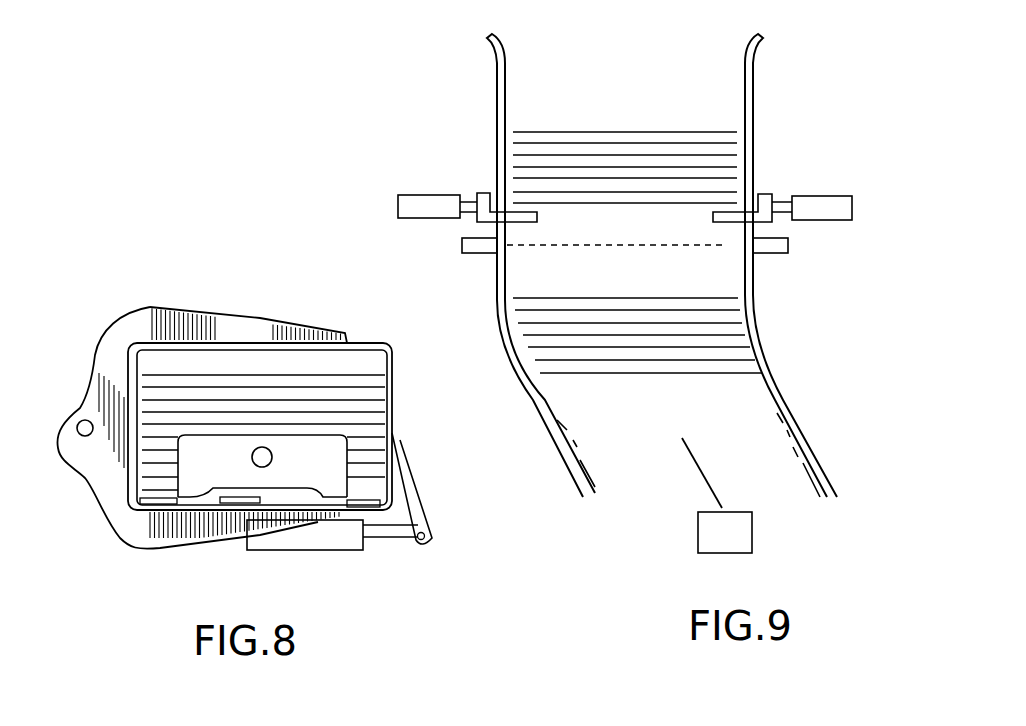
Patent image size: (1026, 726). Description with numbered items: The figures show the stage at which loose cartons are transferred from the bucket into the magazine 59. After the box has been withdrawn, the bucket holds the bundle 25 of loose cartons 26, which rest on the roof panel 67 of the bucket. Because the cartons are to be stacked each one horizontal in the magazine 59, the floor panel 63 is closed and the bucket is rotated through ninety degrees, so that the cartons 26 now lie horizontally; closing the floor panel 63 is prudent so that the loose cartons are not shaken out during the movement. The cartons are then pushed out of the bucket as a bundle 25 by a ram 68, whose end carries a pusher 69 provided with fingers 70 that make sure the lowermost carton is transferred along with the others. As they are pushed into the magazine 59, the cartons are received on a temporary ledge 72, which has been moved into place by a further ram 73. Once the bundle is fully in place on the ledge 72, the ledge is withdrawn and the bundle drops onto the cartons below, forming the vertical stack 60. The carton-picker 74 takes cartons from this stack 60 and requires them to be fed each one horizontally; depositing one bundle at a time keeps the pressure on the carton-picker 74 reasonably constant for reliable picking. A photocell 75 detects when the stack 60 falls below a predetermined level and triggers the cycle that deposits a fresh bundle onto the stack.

In FIG. 9, the bundle 25 is at (640, 144).
In FIG. 8, the cartons 26 is at (263, 390).
In FIG. 9, the cartons 26 is at (713, 178).
In FIG. 9, the magazine 59 is at (803, 420).
In FIG. 9, the stack 60 is at (557, 407).
In FIG. 8, the floor panel 63 is at (393, 360).
In FIG. 8, the roof panel 67 is at (123, 455).
In FIG. 8, the ram 68 is at (262, 468).
In FIG. 8, the pusher 69 is at (285, 480).
In FIG. 8, the fingers 70 is at (198, 490).
In FIG. 9, the temporary ledge 72 is at (776, 222).
In FIG. 9, the ram 73 is at (817, 200).
In FIG. 9, the carton-picker 74 is at (752, 535).
In FIG. 9, the photocell 75 is at (484, 245).